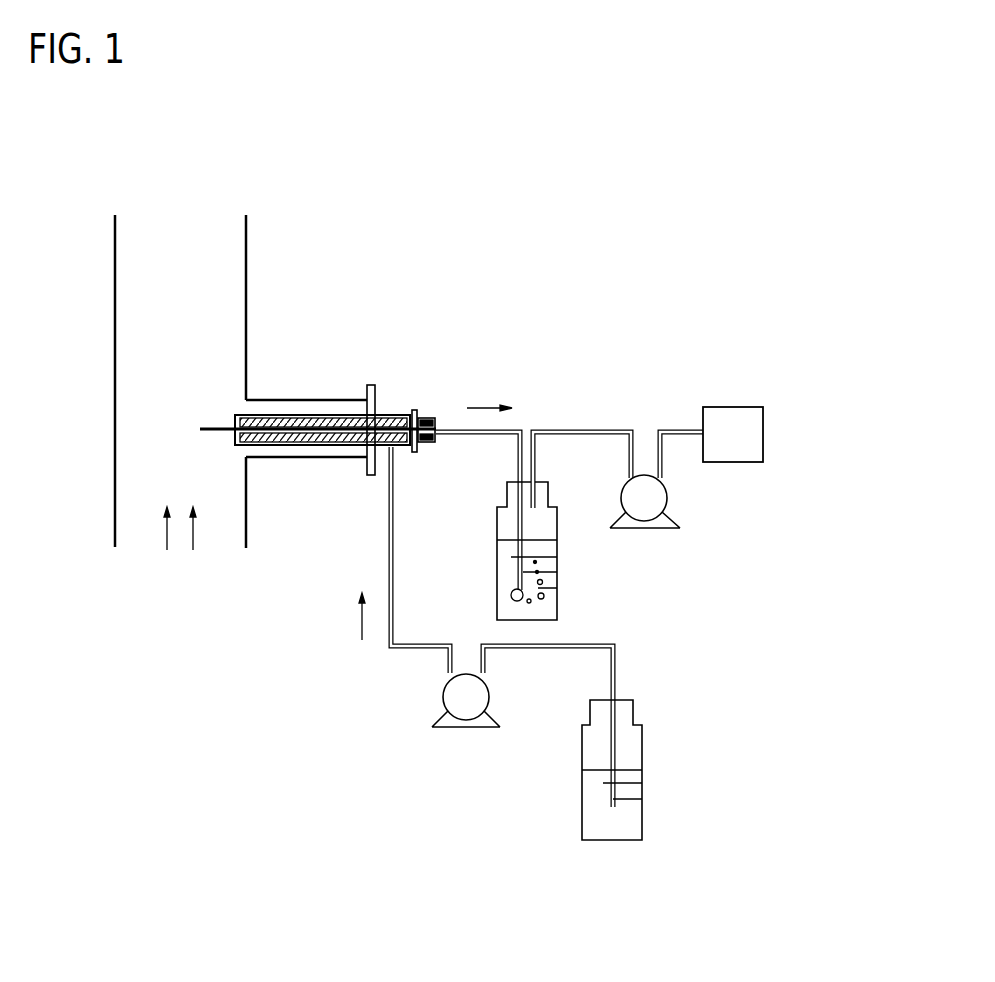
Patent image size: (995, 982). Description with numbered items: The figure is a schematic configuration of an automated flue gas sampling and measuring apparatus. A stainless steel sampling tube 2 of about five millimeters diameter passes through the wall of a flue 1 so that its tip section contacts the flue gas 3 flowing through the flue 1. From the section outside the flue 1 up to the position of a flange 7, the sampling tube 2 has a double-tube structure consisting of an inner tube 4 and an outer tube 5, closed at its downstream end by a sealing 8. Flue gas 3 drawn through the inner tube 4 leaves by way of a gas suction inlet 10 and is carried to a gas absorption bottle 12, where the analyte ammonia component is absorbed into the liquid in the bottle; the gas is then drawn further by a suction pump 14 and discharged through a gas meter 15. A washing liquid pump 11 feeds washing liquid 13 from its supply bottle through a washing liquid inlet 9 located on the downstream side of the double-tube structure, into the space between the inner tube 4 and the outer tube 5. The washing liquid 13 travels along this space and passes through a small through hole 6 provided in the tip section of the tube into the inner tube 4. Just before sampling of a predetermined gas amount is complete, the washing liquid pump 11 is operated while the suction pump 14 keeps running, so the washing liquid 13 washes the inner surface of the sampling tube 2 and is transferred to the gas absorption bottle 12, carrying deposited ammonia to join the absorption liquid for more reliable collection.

The flue 1 is at (180, 375).
The sampling tube 2 is at (218, 423).
The flue gas 3 is at (185, 557).
The inner tube 4 is at (260, 443).
The outer tube 5 is at (340, 415).
The small through hole 6 is at (243, 417).
The flange 7 is at (372, 385).
The sealing 8 is at (432, 417).
The washing liquid inlet 9 is at (385, 460).
The gas suction inlet 10 is at (452, 436).
The washing liquid pump 11 is at (448, 730).
The gas absorption bottle 12 is at (560, 567).
The washing liquid 13 is at (645, 750).
The suction pump 14 is at (658, 532).
The gas meter 15 is at (720, 402).